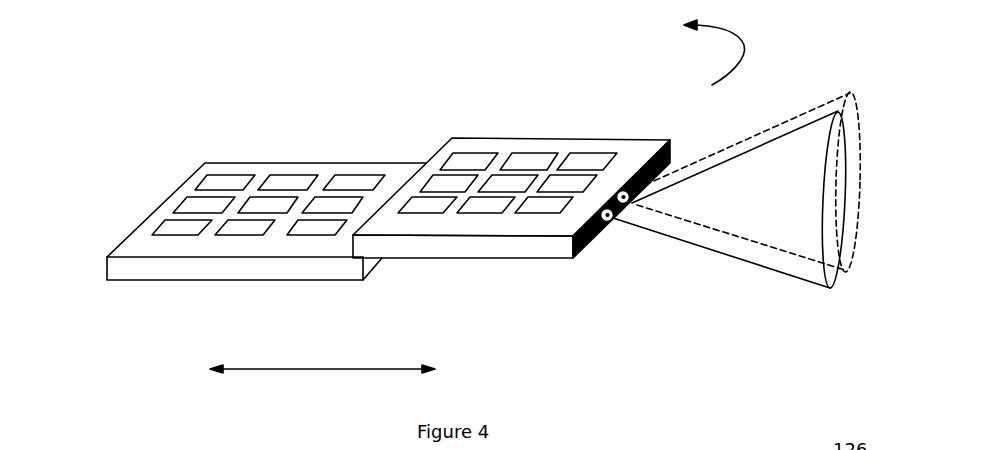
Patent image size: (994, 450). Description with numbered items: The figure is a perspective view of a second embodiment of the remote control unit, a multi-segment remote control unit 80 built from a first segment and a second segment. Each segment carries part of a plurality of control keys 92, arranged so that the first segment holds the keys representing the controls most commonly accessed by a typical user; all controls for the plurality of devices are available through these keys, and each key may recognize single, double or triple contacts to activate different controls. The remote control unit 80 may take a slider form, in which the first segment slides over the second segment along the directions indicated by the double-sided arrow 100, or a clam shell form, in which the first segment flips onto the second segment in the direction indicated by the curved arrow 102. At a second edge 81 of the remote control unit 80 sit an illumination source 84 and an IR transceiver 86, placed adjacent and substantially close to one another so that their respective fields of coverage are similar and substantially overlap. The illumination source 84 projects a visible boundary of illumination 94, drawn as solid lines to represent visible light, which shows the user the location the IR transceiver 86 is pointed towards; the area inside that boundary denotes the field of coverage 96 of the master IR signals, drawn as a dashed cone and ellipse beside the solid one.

The multi-segment remote control unit 80 is at (378, 125).
The second edge 81 is at (573, 258).
The illumination source 84 is at (608, 221).
The IR transceiver 86 is at (626, 191).
The control keys 92 is at (410, 213).
The boundary of illumination 94 is at (838, 288).
The field of coverage 96 is at (852, 110).
The double-sided arrow 100 is at (280, 368).
The curved arrow 102 is at (743, 40).